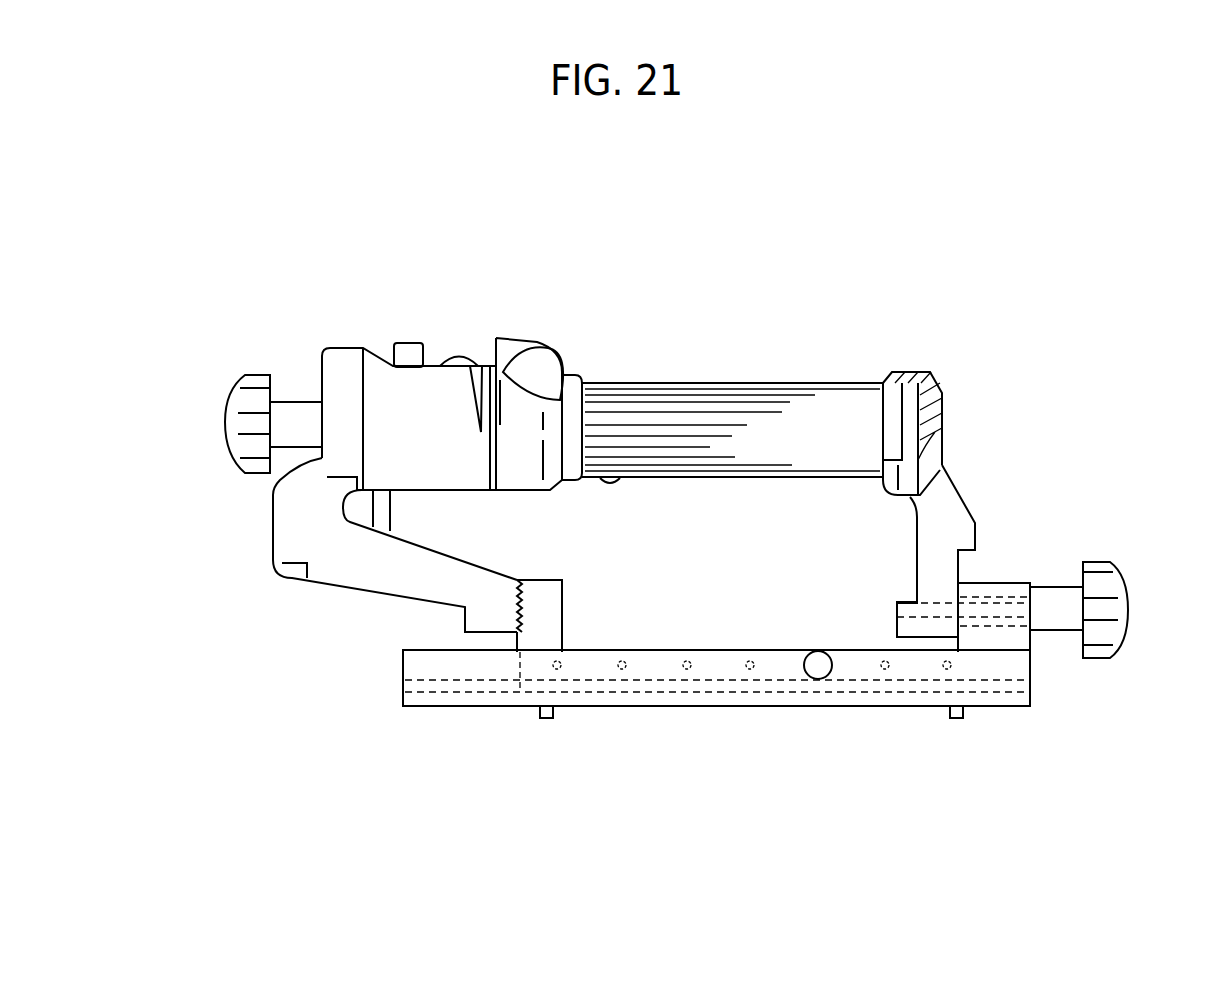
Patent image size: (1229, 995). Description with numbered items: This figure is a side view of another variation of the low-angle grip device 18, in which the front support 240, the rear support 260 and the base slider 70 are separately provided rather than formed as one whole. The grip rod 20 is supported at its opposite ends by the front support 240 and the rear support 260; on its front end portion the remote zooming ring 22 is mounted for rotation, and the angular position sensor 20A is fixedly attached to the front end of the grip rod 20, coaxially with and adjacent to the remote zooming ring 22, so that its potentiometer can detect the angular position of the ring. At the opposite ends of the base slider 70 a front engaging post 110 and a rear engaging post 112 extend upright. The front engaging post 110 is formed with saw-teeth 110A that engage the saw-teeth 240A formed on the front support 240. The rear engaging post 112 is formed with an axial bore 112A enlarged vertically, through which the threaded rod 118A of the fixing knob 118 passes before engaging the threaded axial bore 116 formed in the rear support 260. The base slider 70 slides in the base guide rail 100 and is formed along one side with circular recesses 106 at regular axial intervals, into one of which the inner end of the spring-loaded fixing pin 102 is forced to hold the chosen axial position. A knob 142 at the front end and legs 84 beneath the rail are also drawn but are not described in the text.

The low-angle grip device 18 is at (643, 371).
The grip rod 20 is at (792, 385).
The angular position sensor 20A is at (425, 380).
The remote zooming ring 22 is at (532, 350).
The base slider 70 is at (718, 662).
The leg 84 is at (968, 755).
The base guide rail 100 is at (767, 700).
The fixing pin 102 is at (820, 679).
The circular recesses 106 is at (624, 670).
The front engaging post 110 is at (562, 627).
The saw-teeth 110A is at (512, 640).
The rear engaging post 112 is at (1002, 583).
The axial bore 112A is at (993, 617).
The threaded axial bore 116 is at (895, 606).
The fixing knob 118 is at (1128, 606).
The threaded rod 118A is at (897, 603).
The locking knob 142 is at (227, 430).
The front support 240 is at (368, 585).
The saw-teeth 240A is at (517, 580).
The rear support 260 is at (952, 493).